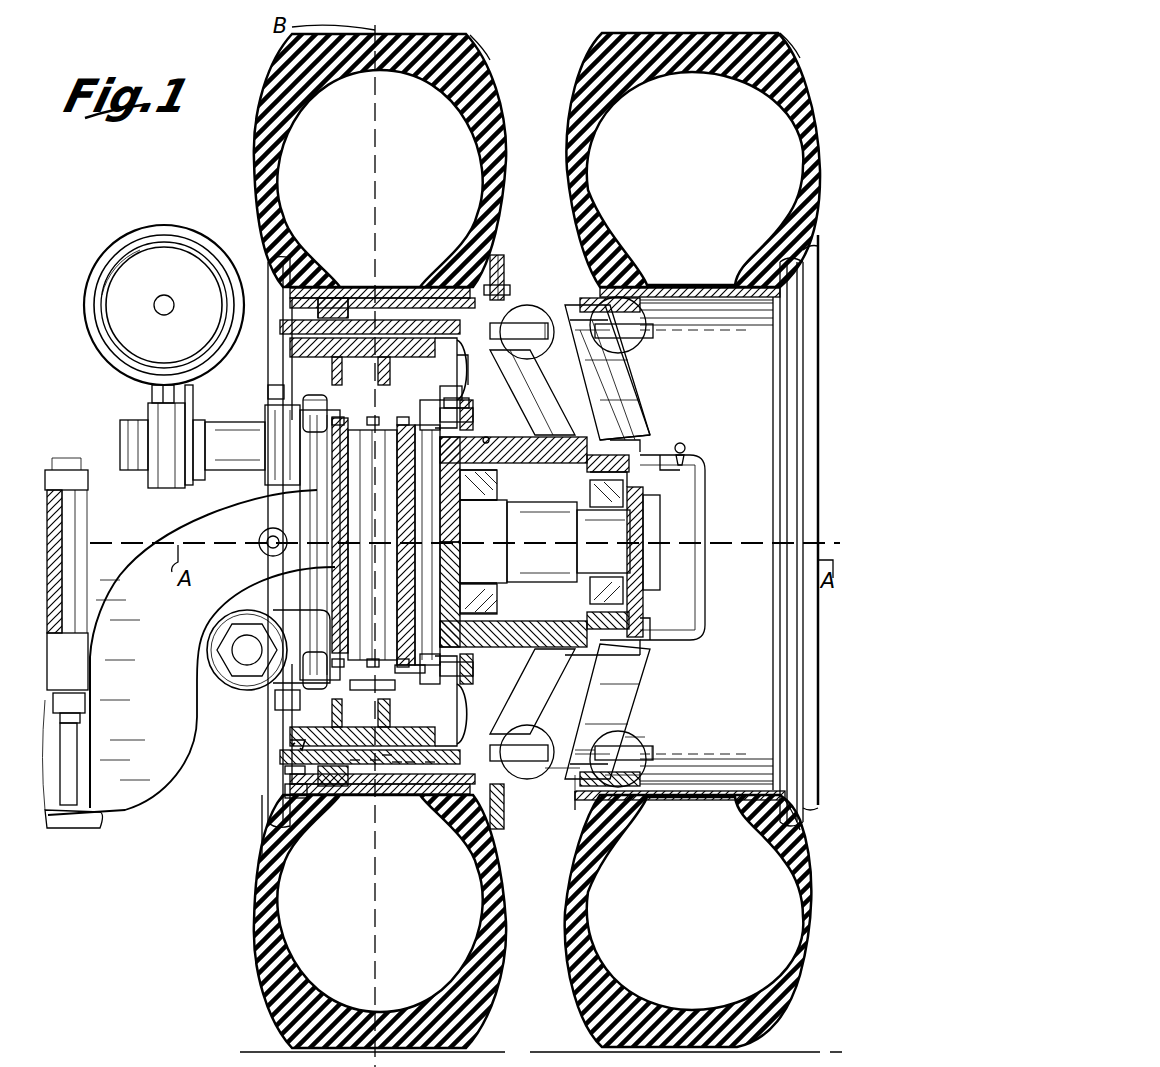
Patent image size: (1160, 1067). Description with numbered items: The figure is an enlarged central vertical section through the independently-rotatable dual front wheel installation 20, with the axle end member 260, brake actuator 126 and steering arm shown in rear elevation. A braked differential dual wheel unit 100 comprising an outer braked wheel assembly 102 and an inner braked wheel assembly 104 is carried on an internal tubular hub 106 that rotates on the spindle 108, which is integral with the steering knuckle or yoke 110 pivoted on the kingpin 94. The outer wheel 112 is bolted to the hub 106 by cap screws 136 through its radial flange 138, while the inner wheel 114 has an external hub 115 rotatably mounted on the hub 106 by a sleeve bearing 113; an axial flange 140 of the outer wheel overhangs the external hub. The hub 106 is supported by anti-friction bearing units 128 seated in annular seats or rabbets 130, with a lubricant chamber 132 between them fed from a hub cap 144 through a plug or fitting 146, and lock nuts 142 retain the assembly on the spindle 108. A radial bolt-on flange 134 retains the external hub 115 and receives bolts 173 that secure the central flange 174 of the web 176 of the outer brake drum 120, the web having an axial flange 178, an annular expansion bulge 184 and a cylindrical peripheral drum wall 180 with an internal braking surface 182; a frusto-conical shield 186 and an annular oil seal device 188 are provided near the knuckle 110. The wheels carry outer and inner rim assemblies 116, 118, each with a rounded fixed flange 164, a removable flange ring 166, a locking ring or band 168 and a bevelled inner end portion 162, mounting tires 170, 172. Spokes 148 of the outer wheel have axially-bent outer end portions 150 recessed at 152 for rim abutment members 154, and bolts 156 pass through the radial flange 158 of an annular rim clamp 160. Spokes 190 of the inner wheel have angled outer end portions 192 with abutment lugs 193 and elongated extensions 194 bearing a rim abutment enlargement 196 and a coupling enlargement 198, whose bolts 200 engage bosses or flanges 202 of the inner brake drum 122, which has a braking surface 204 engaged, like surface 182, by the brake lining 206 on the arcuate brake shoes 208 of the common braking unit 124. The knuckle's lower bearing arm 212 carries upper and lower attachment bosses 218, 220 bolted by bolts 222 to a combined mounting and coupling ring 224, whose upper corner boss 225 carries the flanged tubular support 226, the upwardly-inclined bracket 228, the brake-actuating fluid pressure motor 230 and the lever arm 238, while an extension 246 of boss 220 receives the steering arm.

The independently-rotatable dual front wheel installation 20 is at (82, 385).
The kingpin 94 is at (280, 700).
The braked differential dual wheel unit 100 is at (540, 68).
The outer braked wheel assembly 102 is at (745, 37).
The inner braked wheel assembly 104 is at (421, 34).
The internal tubular hub 106 is at (600, 530).
The spindle 108 is at (665, 615).
The steering knuckle or yoke 110 is at (400, 690).
The outer wheel 112 is at (651, 391).
The sleeve bearing 113 is at (640, 642).
The inner wheel 114 is at (615, 400).
The external hub 115 is at (600, 430).
The outer rim assembly 116 is at (808, 232).
The inner rim assembly 118 is at (265, 840).
The outer brake drum 120 is at (355, 775).
The inner brake drum 122 is at (310, 790).
The common braking unit 124 is at (300, 755).
The brake actuator 126 is at (100, 240).
The anti-friction bearing units 128 is at (490, 600).
The annular seats or rabbets 130 is at (490, 615).
The annular chamber 132 is at (625, 652).
The radial bolt-on flange 134 is at (445, 393).
The cap screws 136 is at (640, 490).
The radial flange 138 is at (630, 505).
The axial flange 140 is at (620, 440).
The lock nuts 142 is at (645, 620).
The hub cap 144 is at (690, 470).
The plug or fitting 146 is at (690, 455).
The spokes 148 is at (610, 375).
The axially-bent outer end portions 150 is at (560, 775).
The recess 152 is at (585, 750).
The rim abutment members 154 is at (575, 780).
The bolts 156 is at (530, 320).
The radial flange 158 is at (645, 770).
The annular rim clamp 160 is at (650, 735).
The bevelled inner end portion 162 is at (500, 276).
The rounded fixed flange 164 is at (282, 265).
The removable flange ring 166 is at (465, 812).
The locking ring or band 168 is at (442, 792).
The outer tire 170 is at (785, 50).
The inner tire 172 is at (465, 56).
The bolts 173 is at (420, 405).
The central flange 174 is at (554, 392).
The web 176 is at (410, 770).
The axial flange 178 is at (492, 436).
The cylindrical peripheral drum wall 180 is at (375, 770).
The cylindrical internal braking surface 182 is at (385, 765).
The annular expansion bulge 184 is at (395, 770).
The frusto-conical shield 186 is at (450, 520).
The annular oil seal device 188 is at (455, 500).
The spokes 190 is at (620, 415).
The angled outer end portions 192 is at (500, 290).
The abutment lugs 193 is at (470, 368).
The elongated extensions 194 is at (420, 292).
The rim abutment enlargement 196 is at (430, 770).
The coupling enlargement 198 is at (350, 292).
The bolts 200 is at (325, 296).
The bosses or flanges 202 is at (332, 300).
The cylindrical internal braking surface 204 is at (300, 790).
The brake lining 206 is at (300, 770).
The arcuate brake shoes 208 is at (305, 745).
The lower bearing arm 212 is at (403, 672).
The upper attachment boss 218 is at (275, 392).
The lower attachment boss 220 is at (308, 612).
The bolts 222 is at (285, 425).
The combined mounting and coupling ring 224 is at (292, 517).
The upper corner boss 225 is at (316, 396).
The flanged tubular support 226 is at (210, 430).
The upwardly-inclined bracket 228 is at (150, 400).
The brake-actuating fluid pressure motor 230 is at (120, 285).
The lever arm 238 is at (160, 410).
The extension 246 is at (230, 670).
The axle end member 260 is at (110, 550).